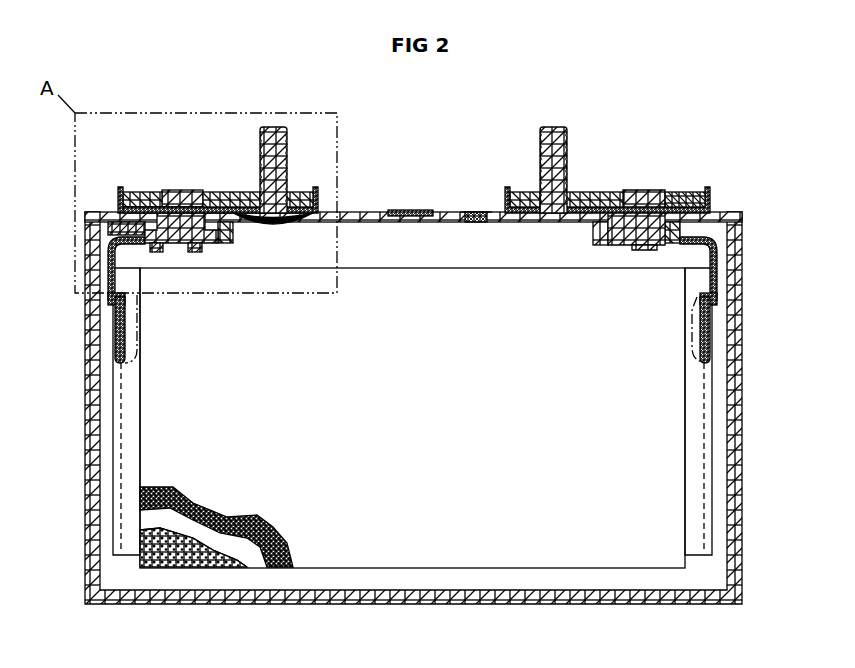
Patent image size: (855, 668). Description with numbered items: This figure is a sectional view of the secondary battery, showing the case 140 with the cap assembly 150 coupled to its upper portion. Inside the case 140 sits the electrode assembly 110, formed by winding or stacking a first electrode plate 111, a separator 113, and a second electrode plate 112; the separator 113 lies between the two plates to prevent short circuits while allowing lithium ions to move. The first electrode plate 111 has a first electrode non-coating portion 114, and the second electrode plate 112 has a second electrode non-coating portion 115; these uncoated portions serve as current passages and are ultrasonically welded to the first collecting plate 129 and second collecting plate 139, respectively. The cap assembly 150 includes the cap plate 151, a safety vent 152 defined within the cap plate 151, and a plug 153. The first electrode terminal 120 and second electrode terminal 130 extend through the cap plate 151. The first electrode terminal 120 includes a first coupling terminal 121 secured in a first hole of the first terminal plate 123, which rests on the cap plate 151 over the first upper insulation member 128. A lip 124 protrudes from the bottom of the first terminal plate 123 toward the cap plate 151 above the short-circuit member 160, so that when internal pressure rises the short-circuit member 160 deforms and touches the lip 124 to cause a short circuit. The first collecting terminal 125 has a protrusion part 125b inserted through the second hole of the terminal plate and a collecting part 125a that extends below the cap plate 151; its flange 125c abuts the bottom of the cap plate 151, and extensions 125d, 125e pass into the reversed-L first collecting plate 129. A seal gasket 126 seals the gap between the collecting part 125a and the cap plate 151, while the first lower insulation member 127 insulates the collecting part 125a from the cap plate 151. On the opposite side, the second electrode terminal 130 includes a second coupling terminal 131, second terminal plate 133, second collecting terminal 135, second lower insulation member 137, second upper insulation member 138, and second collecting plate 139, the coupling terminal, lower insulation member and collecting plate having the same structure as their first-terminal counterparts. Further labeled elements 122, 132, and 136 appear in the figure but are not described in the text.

The electrode assembly 110 is at (412, 459).
The first electrode plate 111 is at (170, 563).
The second electrode plate 112 is at (280, 567).
The separator 113 is at (260, 560).
The first electrode non-coating portion 114 is at (133, 550).
The second electrode non-coating portion 115 is at (695, 545).
The first electrode terminal 120 is at (205, 166).
The first coupling terminal 121 is at (270, 128).
The first terminal thread 122 is at (288, 140).
The first terminal plate 123 is at (235, 192).
The lip 124 is at (254, 214).
The first collecting terminal 125 is at (175, 232).
The collecting part 125a is at (192, 203).
The protrusion part 125b is at (140, 193).
The flange 125c is at (200, 252).
The extension 125d is at (153, 252).
The extension 125e is at (182, 250).
The seal gasket 126 is at (110, 221).
The first lower insulation member 127 is at (122, 240).
The first upper insulation member 128 is at (118, 210).
The first collecting plate 129 is at (112, 298).
The second electrode terminal 130 is at (635, 157).
The second coupling terminal 131 is at (558, 127).
The second terminal thread 132 is at (539, 160).
The second terminal plate 133 is at (606, 190).
The second collecting terminal 135 is at (650, 192).
The second insulating member 136 is at (687, 192).
The second lower insulation member 137 is at (722, 238).
The second upper insulation member 138 is at (710, 192).
The second collecting plate 139 is at (712, 283).
The case 140 is at (735, 413).
The cap assembly 150 is at (413, 165).
The cap plate 151 is at (343, 212).
The safety vent 152 is at (413, 210).
The plug 153 is at (477, 212).
The short-circuit member 160 is at (277, 223).